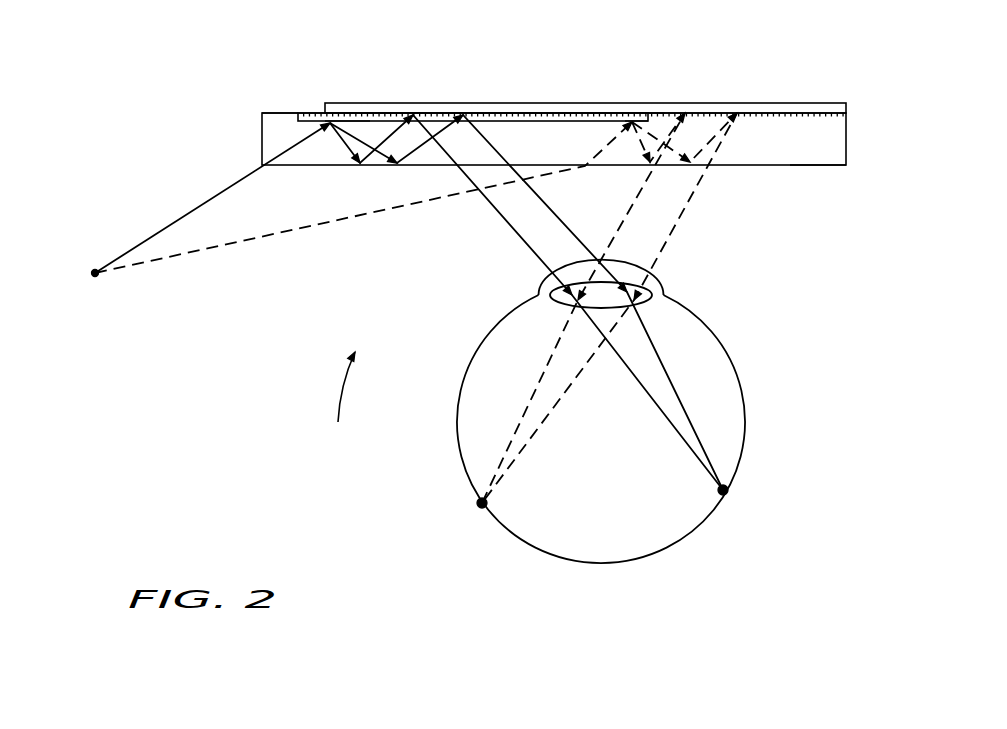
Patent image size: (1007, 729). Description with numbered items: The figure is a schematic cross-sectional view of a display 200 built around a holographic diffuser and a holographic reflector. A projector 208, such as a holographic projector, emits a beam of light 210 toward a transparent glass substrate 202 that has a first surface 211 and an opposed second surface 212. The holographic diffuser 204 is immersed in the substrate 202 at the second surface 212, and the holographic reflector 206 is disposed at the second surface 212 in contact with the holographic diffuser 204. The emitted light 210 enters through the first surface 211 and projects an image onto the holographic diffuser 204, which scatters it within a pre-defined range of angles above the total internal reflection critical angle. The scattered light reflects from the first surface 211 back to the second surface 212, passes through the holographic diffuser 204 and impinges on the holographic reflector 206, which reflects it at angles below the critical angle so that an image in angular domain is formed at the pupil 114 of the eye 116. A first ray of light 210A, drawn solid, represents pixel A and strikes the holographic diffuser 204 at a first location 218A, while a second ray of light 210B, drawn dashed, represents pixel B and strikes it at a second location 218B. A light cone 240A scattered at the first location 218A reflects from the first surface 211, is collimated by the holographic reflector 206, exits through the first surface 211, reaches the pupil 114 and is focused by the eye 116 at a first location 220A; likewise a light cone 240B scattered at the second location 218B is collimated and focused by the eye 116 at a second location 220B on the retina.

The display 200 is at (338, 405).
The substrate 202 is at (262, 140).
The holographic diffuser 204 is at (500, 118).
The holographic reflector 206 is at (557, 103).
The projector 208 is at (95, 280).
The beam of light 210 is at (363, 220).
The first ray of light 210A is at (152, 242).
The second ray of light 210B is at (280, 235).
The first surface 211 is at (814, 166).
The second surface 212 is at (272, 113).
The first location 218A is at (338, 120).
The second location 218B is at (637, 122).
The light cone 240A is at (358, 118).
The light cone 240B is at (650, 118).
The pupil 114 is at (652, 301).
The eye 116 is at (633, 511).
The first location 220A is at (727, 490).
The second location 220B is at (478, 503).